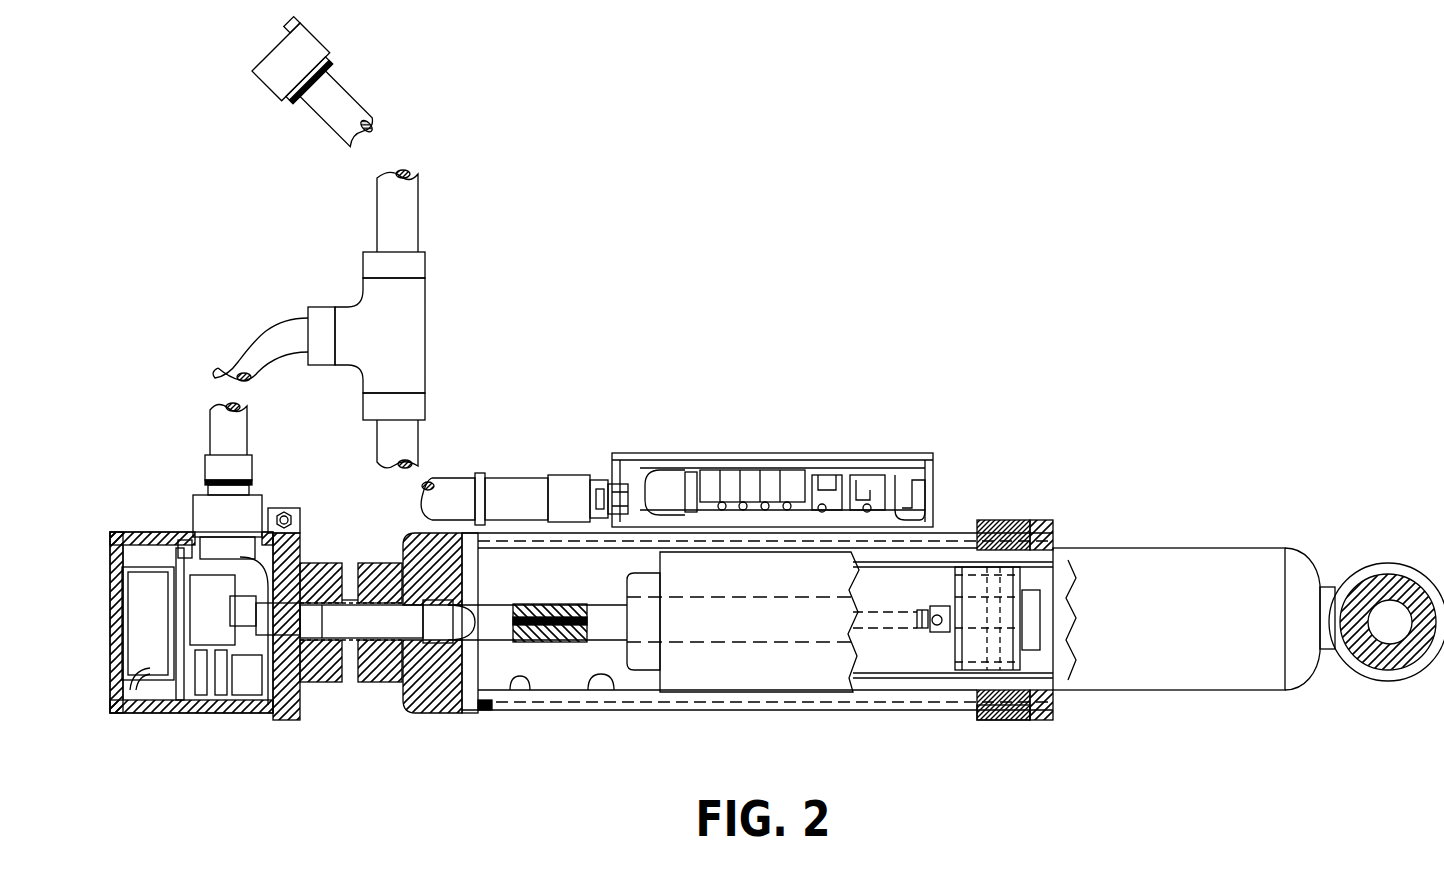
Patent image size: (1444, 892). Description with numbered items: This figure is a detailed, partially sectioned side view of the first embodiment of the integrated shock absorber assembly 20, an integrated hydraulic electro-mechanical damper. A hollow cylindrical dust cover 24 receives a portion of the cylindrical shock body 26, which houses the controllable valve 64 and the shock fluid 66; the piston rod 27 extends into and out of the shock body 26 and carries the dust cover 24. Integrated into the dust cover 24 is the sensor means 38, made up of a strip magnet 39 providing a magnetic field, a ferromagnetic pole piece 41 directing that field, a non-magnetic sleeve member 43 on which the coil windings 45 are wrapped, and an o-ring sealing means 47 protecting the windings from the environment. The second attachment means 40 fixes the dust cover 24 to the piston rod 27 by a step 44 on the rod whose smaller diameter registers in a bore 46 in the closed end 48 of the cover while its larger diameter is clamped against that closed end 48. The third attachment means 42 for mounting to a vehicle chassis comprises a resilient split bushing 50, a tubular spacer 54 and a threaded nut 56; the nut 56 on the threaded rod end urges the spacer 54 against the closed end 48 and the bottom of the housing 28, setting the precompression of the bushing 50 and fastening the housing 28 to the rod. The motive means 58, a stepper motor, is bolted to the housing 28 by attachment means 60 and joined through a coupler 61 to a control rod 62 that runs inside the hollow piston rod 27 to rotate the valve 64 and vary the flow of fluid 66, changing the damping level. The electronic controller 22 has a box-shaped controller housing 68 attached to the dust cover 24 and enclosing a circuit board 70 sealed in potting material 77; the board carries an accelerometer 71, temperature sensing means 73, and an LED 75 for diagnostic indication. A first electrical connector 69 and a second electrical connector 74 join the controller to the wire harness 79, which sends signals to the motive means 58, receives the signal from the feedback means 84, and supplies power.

The integrated shock absorber assembly 20 is at (721, 292).
The electronic controller 22 is at (720, 428).
The dust cover 24 is at (822, 712).
The shock body 26 is at (1110, 560).
The piston rod 27 is at (697, 655).
The housing 28 is at (110, 553).
The sensor means 38 is at (1065, 502).
The magnet 39 is at (998, 722).
The second attachment means 40 is at (403, 700).
The pole piece 41 is at (1058, 700).
The third attachment means 42 is at (348, 535).
The sleeve member 43 is at (598, 695).
The step 44 is at (472, 715).
The coil windings 45 is at (520, 700).
The bore 46 is at (380, 640).
The sealing means 47 is at (496, 712).
The closed end 48 is at (425, 712).
The resilient split bushing 50 is at (358, 692).
The tubular spacer 54 is at (312, 700).
The threaded nut 56 is at (258, 700).
The motive means 58 is at (130, 605).
The attachment means 60 is at (184, 547).
The coupler 61 is at (228, 700).
The control rod 62 is at (560, 645).
The controllable valve 64 is at (939, 590).
The fluid 66 is at (1055, 620).
The controller housing 68 is at (757, 468).
The first electrical connector 69 is at (578, 490).
The circuit board 70 is at (850, 478).
The accelerometer 71 is at (832, 478).
The temperature sensing means 73 is at (690, 520).
The second electrical connector 74 is at (248, 517).
The LED 75 is at (624, 508).
The potting material 77 is at (922, 490).
The wire harness 79 is at (452, 262).
The feedback means 84 is at (245, 703).